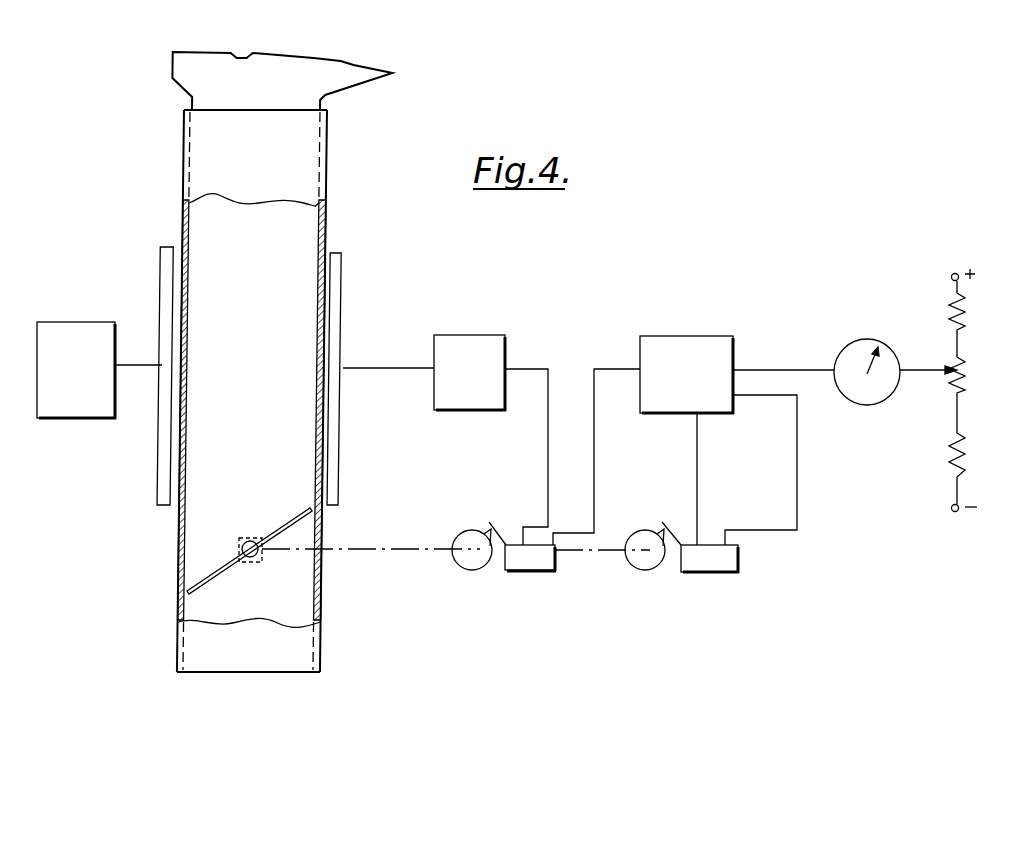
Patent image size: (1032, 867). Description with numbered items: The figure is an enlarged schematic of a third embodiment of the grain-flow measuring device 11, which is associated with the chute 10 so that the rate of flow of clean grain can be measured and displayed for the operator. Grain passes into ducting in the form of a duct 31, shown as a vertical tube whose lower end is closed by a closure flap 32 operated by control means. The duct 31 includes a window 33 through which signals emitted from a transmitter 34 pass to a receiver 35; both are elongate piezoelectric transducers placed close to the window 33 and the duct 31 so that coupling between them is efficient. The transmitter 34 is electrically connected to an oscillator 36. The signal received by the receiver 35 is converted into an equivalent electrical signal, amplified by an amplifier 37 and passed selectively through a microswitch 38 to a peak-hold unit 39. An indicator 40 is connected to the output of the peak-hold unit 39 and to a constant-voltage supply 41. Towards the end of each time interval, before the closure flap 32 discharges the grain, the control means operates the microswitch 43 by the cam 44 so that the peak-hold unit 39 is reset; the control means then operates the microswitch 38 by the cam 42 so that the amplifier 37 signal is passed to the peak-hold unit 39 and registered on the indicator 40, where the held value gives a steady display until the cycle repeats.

The chute 10 is at (205, 76).
The grain-flow measuring device 11 is at (177, 184).
The duct 31 is at (323, 162).
The closure flap 32 is at (290, 523).
The window 33 is at (185, 496).
The transmitter 34 is at (162, 263).
The receiver 35 is at (335, 292).
The oscillator 36 is at (82, 390).
The amplifier 37 is at (484, 390).
The microswitch 38 is at (544, 569).
The peak-hold unit 39 is at (673, 330).
The indicator 40 is at (860, 348).
The constant-voltage supply 41 is at (968, 350).
The cam 42 is at (466, 568).
The microswitch 43 is at (724, 570).
The cam 44 is at (643, 568).